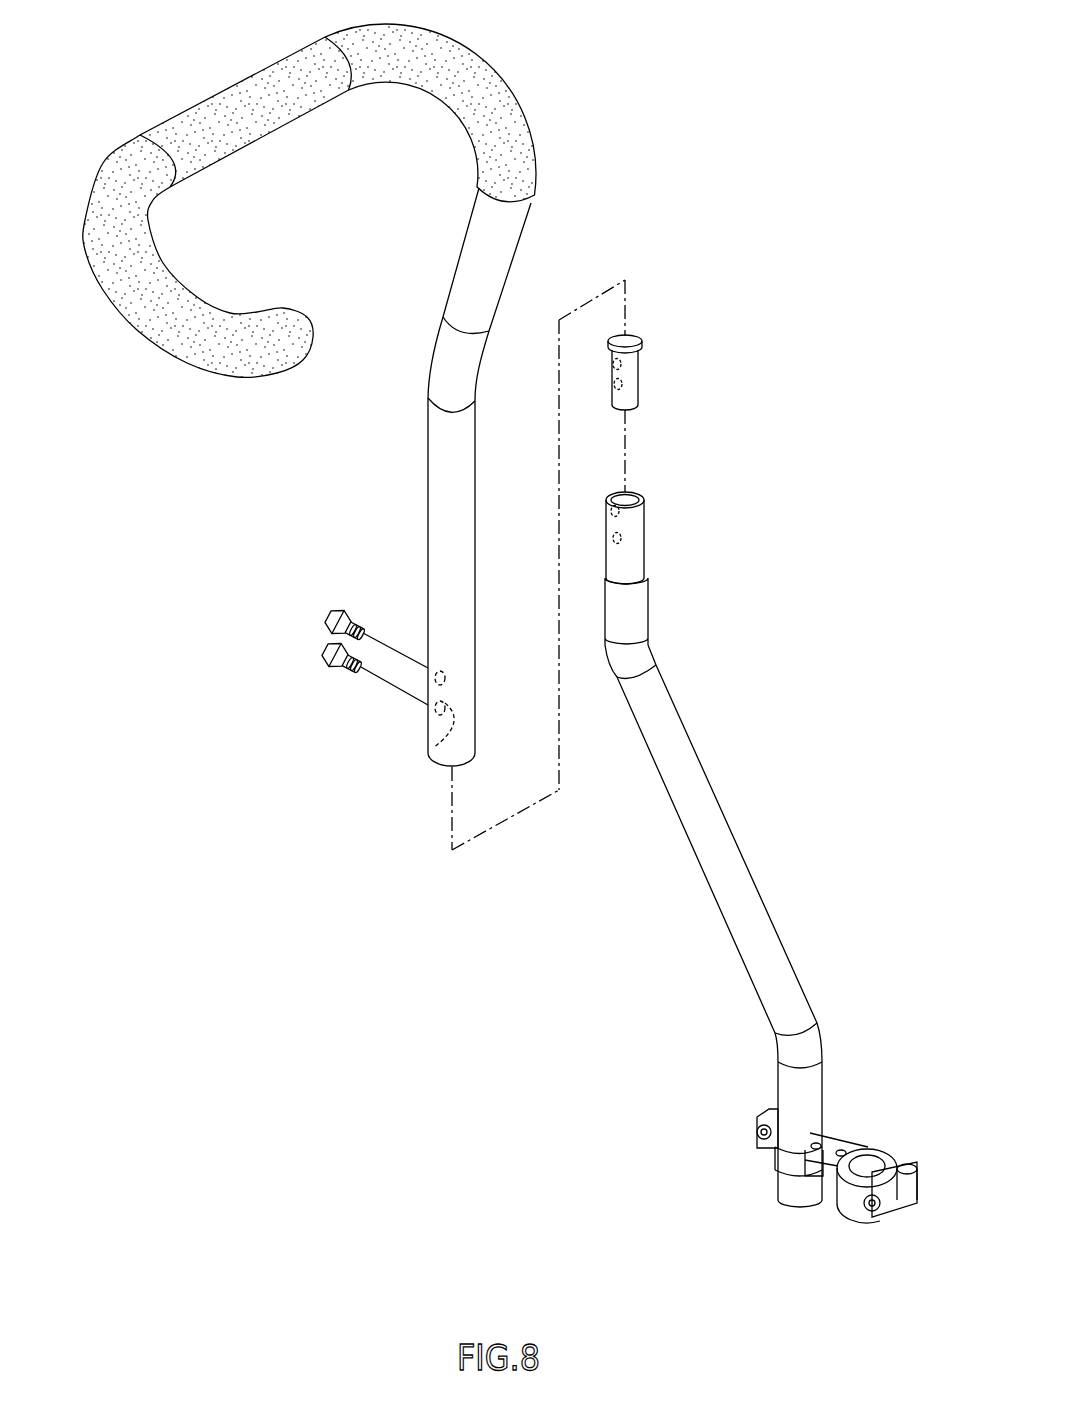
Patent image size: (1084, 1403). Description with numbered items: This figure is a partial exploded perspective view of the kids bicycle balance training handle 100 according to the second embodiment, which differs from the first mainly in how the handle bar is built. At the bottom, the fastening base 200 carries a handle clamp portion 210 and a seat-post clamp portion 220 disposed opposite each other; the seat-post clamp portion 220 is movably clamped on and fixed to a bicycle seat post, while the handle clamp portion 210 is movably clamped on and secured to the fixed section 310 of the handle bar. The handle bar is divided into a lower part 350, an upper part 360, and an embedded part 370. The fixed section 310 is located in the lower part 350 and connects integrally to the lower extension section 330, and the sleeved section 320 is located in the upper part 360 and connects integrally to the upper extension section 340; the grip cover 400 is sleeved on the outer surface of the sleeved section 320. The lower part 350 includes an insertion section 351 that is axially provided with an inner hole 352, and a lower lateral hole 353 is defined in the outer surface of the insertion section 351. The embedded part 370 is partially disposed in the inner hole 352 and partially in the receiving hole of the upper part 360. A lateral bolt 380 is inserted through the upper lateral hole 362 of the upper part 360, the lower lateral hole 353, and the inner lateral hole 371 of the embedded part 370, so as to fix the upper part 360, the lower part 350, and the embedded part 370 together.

The kids bicycle balance training handle 100 is at (502, 665).
The fastening base 200 is at (790, 1171).
The handle clamp portion 210 is at (758, 1100).
The seat-post clamp portion 220 is at (900, 1217).
The fixed section 310 is at (813, 1092).
The sleeved section 320 is at (507, 244).
The lower extension section 330 is at (718, 836).
The upper extension section 340 is at (433, 485).
The lower part 350 is at (659, 575).
The insertion section 351 is at (638, 560).
The inner hole 352 is at (633, 493).
The lower lateral hole 353 is at (605, 520).
The upper part 360 is at (352, 402).
The upper lateral hole 362 is at (427, 667).
The embedded part 370 is at (622, 348).
The inner lateral hole 371 is at (607, 368).
The lateral bolt 380 is at (328, 620).
The grip cover 400 is at (219, 107).